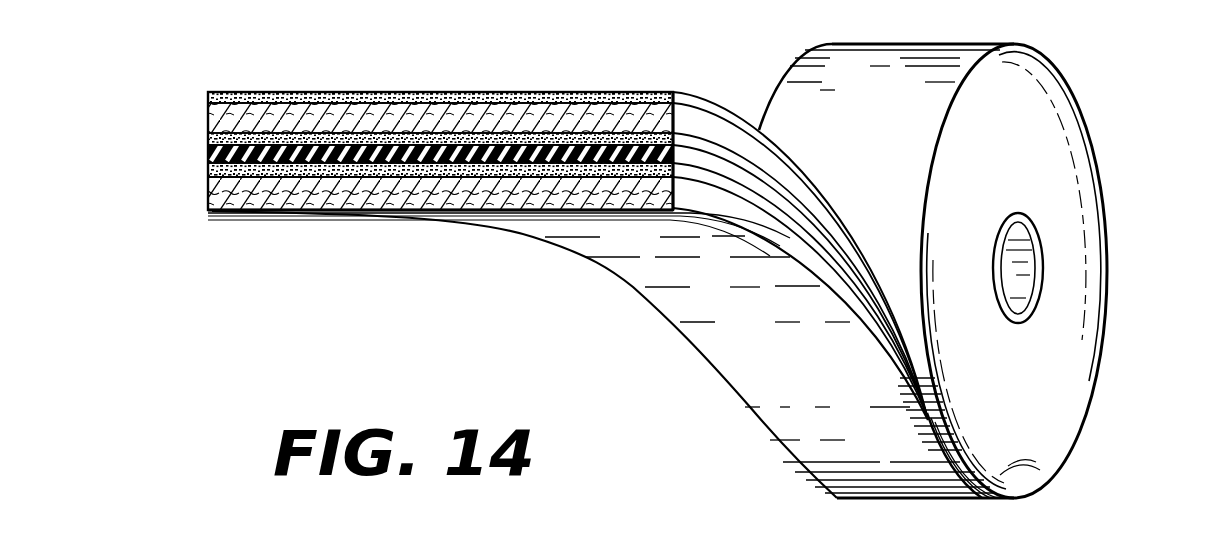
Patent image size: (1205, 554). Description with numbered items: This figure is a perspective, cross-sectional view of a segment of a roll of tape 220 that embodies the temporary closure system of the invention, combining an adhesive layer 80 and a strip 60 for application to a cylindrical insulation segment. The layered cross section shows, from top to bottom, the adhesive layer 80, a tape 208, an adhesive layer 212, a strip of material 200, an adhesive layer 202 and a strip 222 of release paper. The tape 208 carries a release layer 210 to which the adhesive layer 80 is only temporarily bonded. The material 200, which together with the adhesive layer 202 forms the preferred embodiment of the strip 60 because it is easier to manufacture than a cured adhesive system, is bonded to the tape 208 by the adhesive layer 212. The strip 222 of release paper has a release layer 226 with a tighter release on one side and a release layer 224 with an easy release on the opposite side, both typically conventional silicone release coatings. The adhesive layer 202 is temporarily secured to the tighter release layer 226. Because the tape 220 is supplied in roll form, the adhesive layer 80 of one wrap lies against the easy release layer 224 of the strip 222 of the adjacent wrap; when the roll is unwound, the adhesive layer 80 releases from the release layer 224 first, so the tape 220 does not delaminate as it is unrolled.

The strip 60 is at (110, 158).
The adhesive layer 80 is at (207, 93).
The strip of material 200 is at (207, 154).
The adhesive layer 202 is at (207, 170).
The tape 208 is at (207, 118).
The release layer 210 is at (207, 100).
The adhesive layer 212 is at (207, 138).
The roll of tape 220 is at (1088, 343).
The strip of release paper 222 is at (207, 200).
The release layer 224 is at (240, 211).
The release layer 226 is at (207, 186).